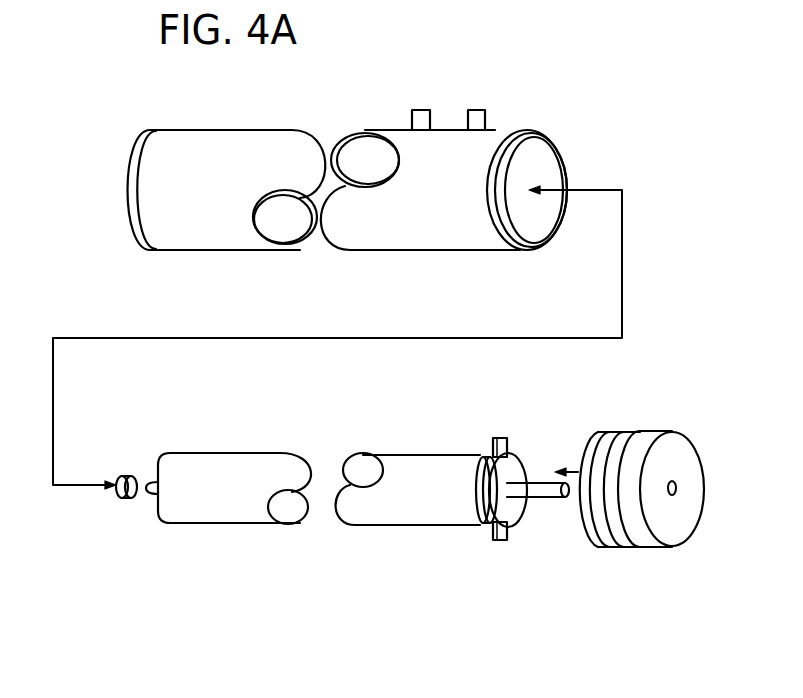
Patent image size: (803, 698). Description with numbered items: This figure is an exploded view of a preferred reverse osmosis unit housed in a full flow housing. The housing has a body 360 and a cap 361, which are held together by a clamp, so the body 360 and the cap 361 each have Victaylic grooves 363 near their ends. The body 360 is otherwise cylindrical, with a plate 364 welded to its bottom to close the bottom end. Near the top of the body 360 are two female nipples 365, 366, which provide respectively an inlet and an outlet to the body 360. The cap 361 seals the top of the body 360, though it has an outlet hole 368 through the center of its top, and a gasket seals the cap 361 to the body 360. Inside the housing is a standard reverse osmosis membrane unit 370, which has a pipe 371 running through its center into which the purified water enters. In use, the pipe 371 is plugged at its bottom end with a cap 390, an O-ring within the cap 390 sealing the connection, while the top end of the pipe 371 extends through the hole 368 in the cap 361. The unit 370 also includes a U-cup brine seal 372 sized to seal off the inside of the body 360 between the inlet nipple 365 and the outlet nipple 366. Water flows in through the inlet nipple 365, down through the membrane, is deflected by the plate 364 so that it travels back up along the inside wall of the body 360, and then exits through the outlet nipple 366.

The body 360 is at (438, 148).
The cap 361 is at (679, 471).
The Victaylic grooves 363 is at (498, 126).
The plate 364 is at (135, 153).
The female nipple 365 is at (486, 108).
The female nipple 366 is at (423, 106).
The outlet hole 368 is at (676, 493).
The reverse osmosis membrane unit 370 is at (456, 486).
The pipe 371 is at (542, 512).
The U-cup brine seal 372 is at (515, 433).
The cap 390 is at (104, 507).